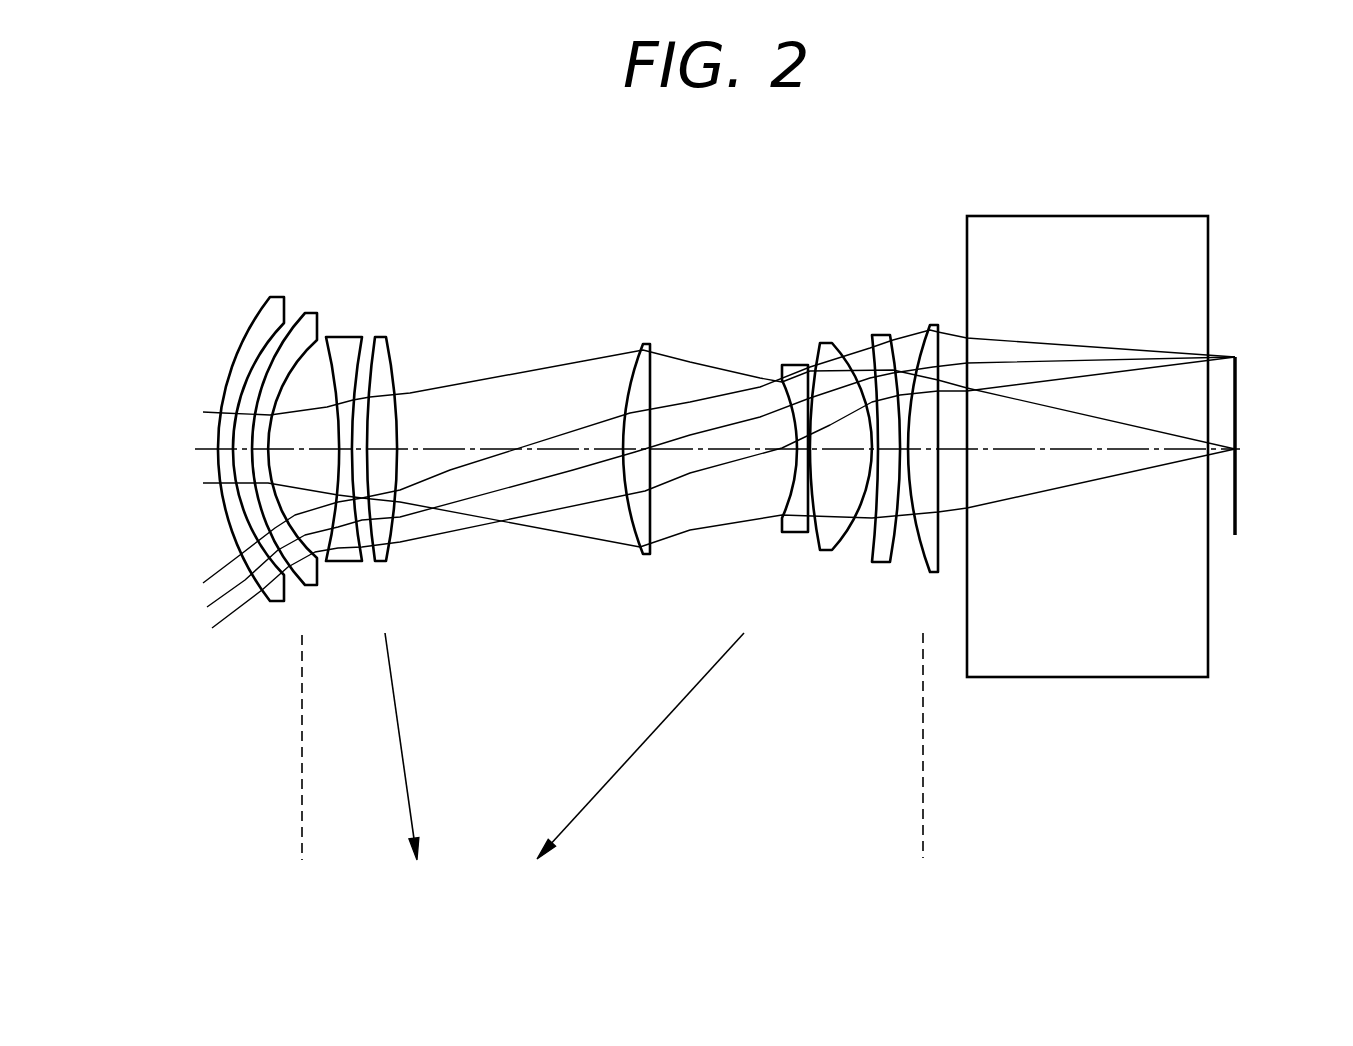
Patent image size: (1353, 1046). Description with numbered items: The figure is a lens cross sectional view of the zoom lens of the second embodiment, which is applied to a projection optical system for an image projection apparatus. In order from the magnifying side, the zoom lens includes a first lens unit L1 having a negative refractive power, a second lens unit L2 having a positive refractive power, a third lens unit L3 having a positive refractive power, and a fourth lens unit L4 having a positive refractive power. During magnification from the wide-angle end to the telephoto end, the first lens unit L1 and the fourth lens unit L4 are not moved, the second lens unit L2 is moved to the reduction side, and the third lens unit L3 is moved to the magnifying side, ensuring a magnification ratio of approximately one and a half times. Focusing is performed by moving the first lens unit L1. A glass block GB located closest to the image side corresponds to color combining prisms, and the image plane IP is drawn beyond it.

The first lens unit L1 is at (203, 288).
The second lens unit L2 is at (375, 288).
The third lens unit L3 is at (627, 287).
The fourth lens unit L4 is at (973, 175).
The glass block GB is at (1095, 652).
The image plane IP is at (1237, 508).